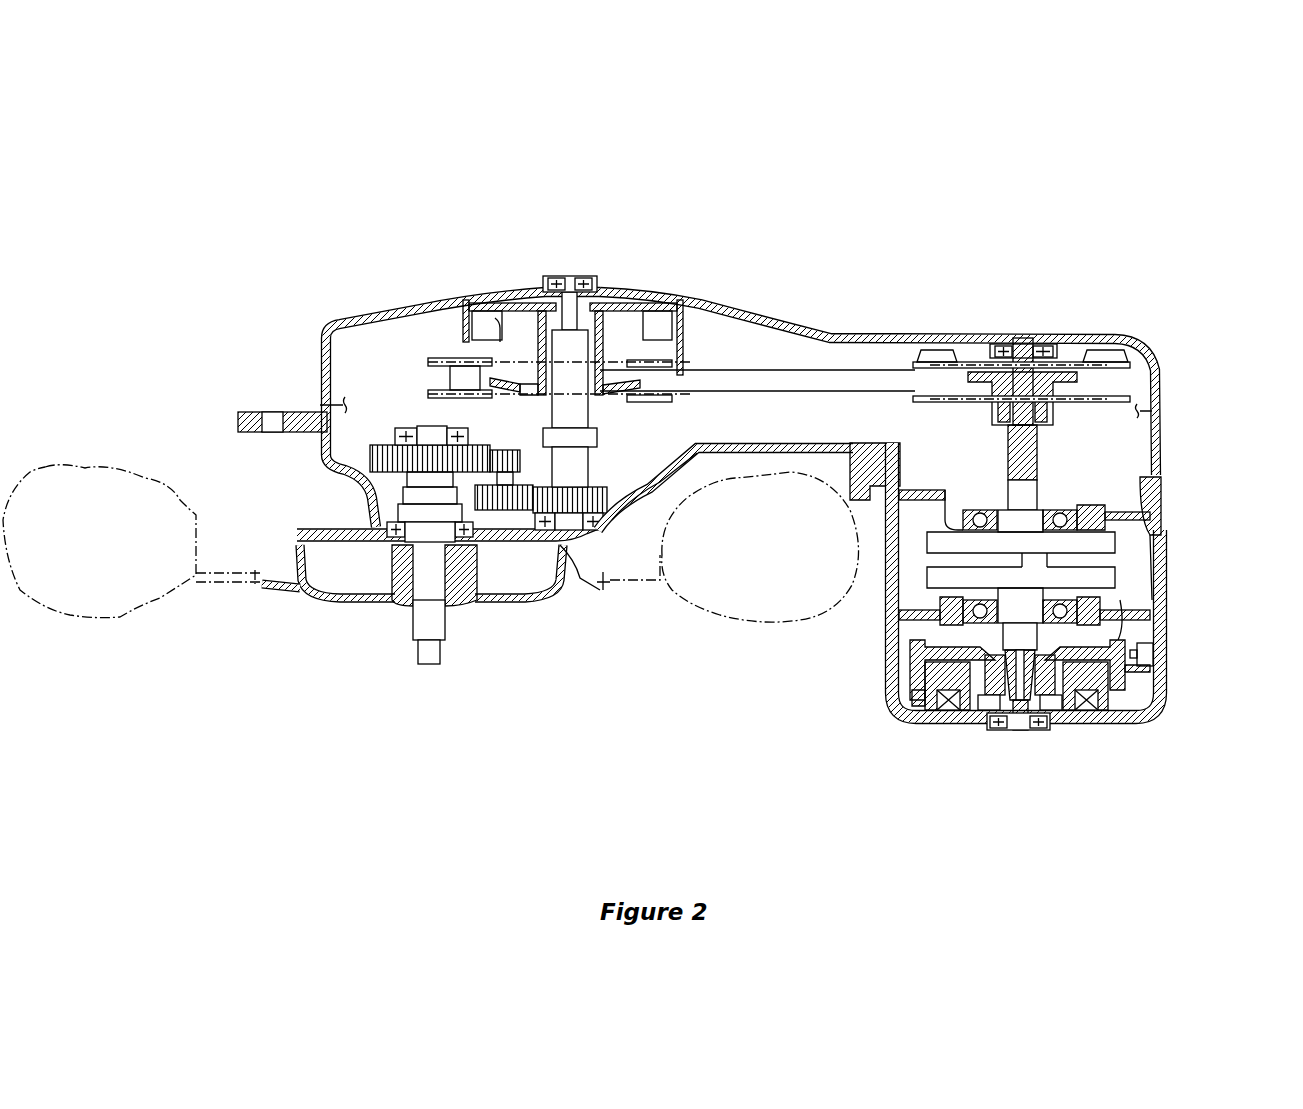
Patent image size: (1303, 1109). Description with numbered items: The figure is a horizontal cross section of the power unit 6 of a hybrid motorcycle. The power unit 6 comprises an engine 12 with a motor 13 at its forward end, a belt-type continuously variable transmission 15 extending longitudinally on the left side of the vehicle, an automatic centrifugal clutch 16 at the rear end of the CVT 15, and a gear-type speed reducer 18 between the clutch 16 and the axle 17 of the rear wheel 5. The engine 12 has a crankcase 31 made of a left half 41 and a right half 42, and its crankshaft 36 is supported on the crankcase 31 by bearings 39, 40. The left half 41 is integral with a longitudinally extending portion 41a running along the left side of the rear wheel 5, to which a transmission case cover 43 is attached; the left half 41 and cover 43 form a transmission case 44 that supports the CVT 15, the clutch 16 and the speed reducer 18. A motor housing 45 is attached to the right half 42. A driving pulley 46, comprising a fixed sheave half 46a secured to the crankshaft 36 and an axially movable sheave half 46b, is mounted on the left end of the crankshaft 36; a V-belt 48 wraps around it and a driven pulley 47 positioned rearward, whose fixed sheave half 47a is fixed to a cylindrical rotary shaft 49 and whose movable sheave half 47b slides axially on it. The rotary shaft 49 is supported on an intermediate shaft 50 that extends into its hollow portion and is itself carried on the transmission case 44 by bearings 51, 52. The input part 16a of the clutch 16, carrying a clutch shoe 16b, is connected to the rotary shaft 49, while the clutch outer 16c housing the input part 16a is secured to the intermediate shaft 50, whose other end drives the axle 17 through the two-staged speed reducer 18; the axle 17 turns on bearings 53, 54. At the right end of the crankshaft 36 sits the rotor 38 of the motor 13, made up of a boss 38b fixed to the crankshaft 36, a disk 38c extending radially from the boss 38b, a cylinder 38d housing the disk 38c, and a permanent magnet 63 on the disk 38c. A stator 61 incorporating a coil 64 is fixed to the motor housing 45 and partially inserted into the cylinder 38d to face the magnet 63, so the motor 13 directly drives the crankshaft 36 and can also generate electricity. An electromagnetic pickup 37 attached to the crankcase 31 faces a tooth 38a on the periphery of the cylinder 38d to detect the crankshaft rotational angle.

The rear wheel 5 is at (125, 618).
The power unit 6 is at (1010, 226).
The engine 12 is at (1192, 604).
The motor 13 is at (1064, 744).
The belt-type continuously variable transmission 15 is at (801, 355).
The automatic centrifugal clutch 16 is at (623, 301).
The input part 16a is at (608, 330).
The clutch shoe 16b is at (657, 333).
The clutch outer 16c is at (690, 347).
The axle 17 is at (447, 626).
The gear-type speed reducer 18 is at (322, 406).
The crankcase 31 is at (1097, 549).
The crankshaft 36 is at (1037, 495).
The electromagnetic pickup 37 is at (1152, 678).
The rotor 38 is at (1005, 712).
The tooth 38a is at (1150, 648).
The boss 38b is at (976, 695).
The disk 38c is at (930, 655).
The cylinder 38d is at (910, 703).
The bearing 39 is at (969, 508).
The bearing 40 is at (940, 602).
The left half 41 is at (1160, 536).
The longitudinally extending portion 41a is at (753, 452).
The right half 42 is at (1074, 572).
The transmission case cover 43 is at (880, 335).
The transmission case 44 is at (358, 305).
The motor housing 45 is at (1150, 722).
The driving pulley 46 is at (1077, 333).
The fixed sheave half 46a is at (1063, 350).
The movable sheave half 46b is at (1138, 398).
The driven pulley 47 is at (562, 322).
The fixed sheave half 47a is at (670, 401).
The movable sheave half 47b is at (660, 363).
The V-belt 48 is at (840, 382).
The rotary shaft 49 is at (527, 340).
The intermediate shaft 50 is at (568, 340).
The bearing 51 is at (600, 538).
The bearing 52 is at (583, 336).
The bearing 53 is at (377, 523).
The bearing 54 is at (405, 433).
The stator 61 is at (899, 710).
The permanent magnet 63 is at (925, 670).
The coil 64 is at (948, 710).